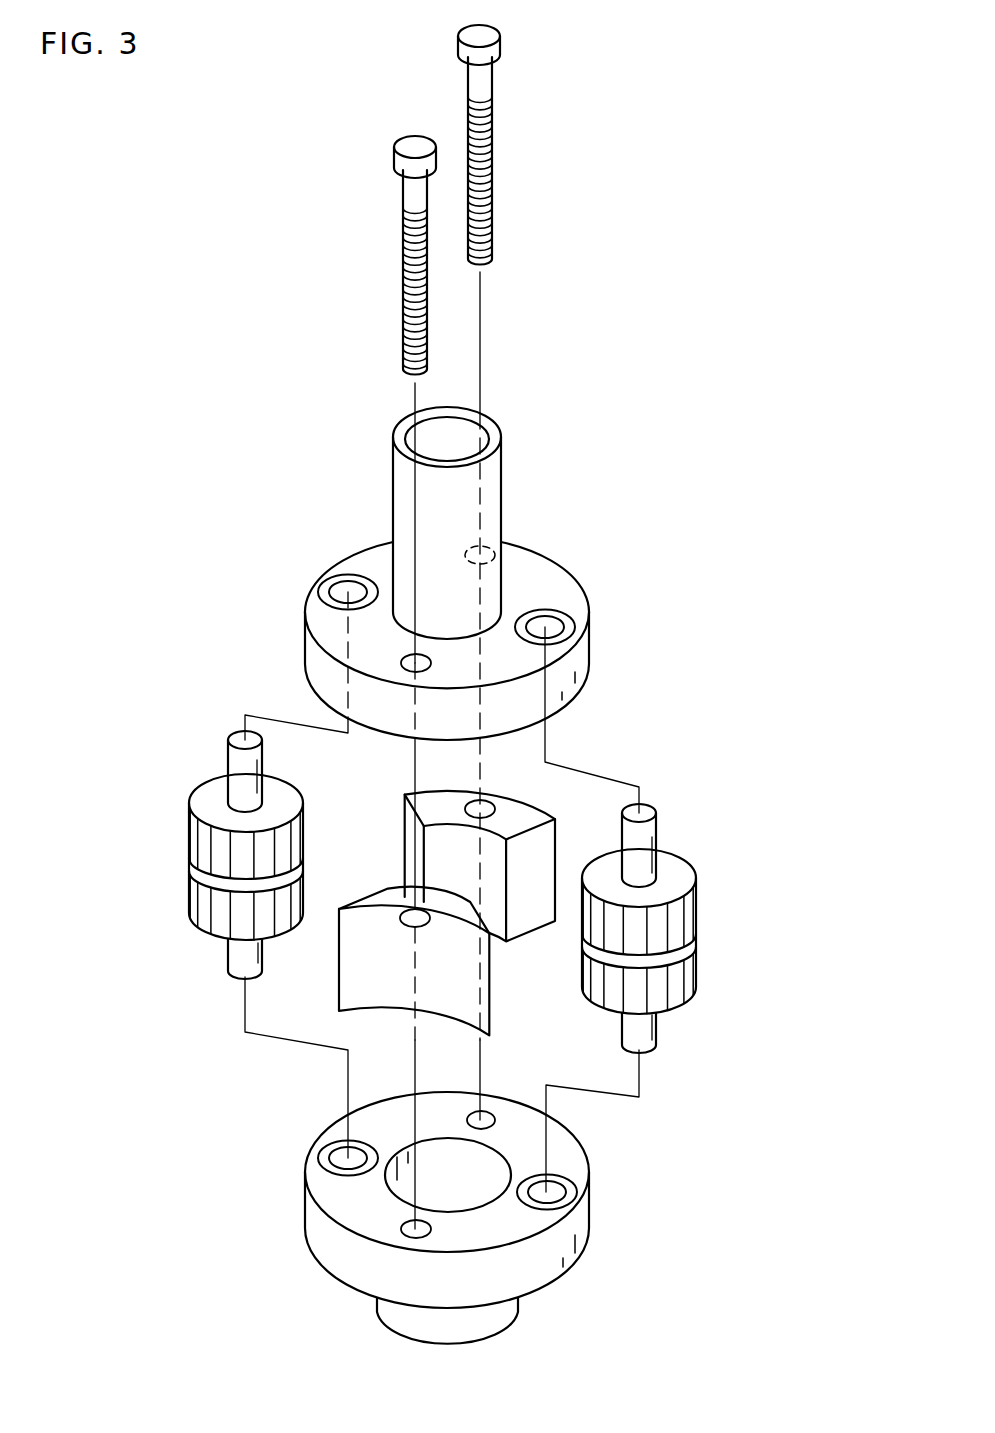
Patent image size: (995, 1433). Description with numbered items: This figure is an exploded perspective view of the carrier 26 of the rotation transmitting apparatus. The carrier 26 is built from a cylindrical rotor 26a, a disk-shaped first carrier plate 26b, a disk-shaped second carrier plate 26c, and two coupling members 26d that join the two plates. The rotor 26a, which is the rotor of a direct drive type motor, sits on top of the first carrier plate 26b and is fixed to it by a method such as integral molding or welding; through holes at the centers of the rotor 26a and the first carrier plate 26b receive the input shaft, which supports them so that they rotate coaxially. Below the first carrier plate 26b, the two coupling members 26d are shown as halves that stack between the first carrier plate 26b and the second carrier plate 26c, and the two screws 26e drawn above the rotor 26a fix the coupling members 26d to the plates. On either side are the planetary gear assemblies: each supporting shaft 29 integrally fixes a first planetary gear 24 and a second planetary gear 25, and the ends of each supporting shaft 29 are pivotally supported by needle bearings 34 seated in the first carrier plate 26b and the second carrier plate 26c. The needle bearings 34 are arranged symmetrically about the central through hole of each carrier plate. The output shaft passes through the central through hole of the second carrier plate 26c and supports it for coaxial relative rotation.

The carrier 26 is at (616, 546).
The cylindrical rotor 26a is at (495, 487).
The first carrier plate 26b is at (590, 638).
The second carrier plate 26c is at (592, 1218).
The coupling member 26d is at (407, 833).
The screw 26e is at (502, 47).
The needle bearing 34 is at (327, 590).
The first planetary gear 24 is at (445, 894).
The second planetary gear 25 is at (190, 883).
The supporting shaft 29 is at (230, 757).